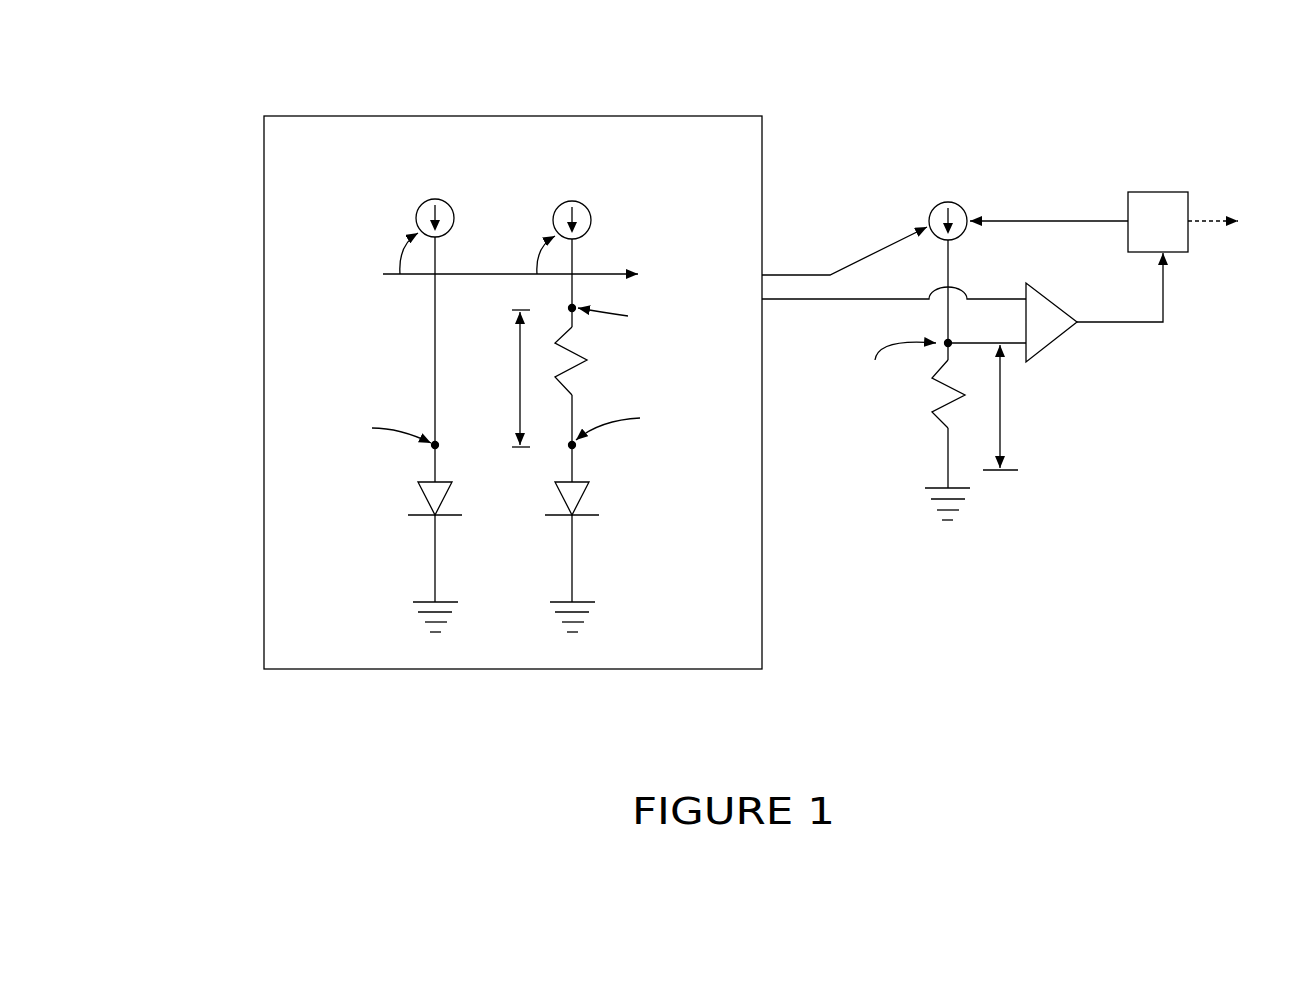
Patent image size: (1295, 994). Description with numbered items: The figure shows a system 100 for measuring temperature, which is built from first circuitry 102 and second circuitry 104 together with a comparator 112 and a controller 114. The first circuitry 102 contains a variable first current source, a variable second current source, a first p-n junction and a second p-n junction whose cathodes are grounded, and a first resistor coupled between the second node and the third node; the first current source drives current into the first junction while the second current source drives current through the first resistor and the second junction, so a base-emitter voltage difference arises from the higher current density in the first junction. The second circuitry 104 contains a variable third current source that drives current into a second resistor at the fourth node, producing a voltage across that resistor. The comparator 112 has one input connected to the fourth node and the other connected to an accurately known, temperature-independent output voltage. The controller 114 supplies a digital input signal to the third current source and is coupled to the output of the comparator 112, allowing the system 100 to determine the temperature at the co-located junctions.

The system 100 is at (182, 46).
The first circuitry 102 is at (285, 172).
The second circuitry 104 is at (842, 516).
The comparator 112 is at (1054, 348).
The controller 114 is at (1173, 234).